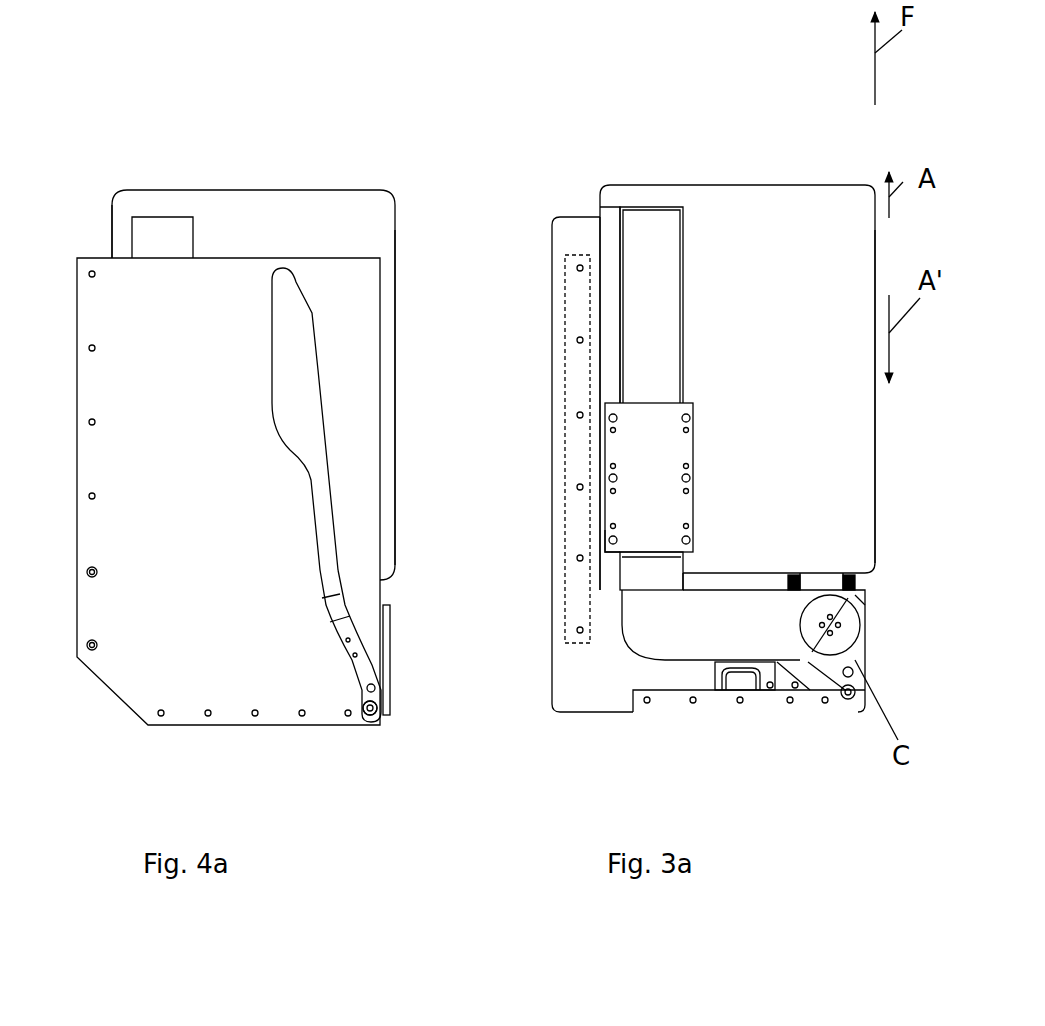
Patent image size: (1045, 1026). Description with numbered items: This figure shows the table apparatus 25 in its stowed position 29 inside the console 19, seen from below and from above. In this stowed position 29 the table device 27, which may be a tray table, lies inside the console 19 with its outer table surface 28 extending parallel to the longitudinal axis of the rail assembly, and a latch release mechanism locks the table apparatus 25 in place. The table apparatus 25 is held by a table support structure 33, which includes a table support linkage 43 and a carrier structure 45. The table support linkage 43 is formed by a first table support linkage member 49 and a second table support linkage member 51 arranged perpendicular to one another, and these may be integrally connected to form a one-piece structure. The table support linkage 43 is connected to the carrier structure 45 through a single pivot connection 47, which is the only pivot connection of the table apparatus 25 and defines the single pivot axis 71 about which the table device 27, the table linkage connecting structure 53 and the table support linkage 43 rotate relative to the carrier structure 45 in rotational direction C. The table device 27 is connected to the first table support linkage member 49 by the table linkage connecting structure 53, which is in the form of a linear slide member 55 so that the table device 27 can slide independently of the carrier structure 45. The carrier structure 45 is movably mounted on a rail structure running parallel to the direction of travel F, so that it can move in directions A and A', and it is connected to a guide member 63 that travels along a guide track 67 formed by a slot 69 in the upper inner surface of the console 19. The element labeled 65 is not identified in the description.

In FIG. 4a, the console 19 is at (275, 727).
In FIG. 3a, the console 19 is at (618, 718).
In FIG. 3a, the table apparatus 25 is at (598, 207).
In FIG. 4a, the table device 27 is at (297, 215).
In FIG. 3a, the table device 27 is at (735, 195).
In FIG. 4a, the outer table surface 28 is at (396, 392).
In FIG. 3a, the outer table surface 28 is at (879, 432).
In FIG. 4a, the stowed position 29 is at (103, 247).
In FIG. 3a, the stowed position 29 is at (580, 207).
In FIG. 3a, the table support structure 33 is at (622, 650).
In FIG. 3a, the table support linkage 43 is at (618, 583).
In FIG. 4a, the carrier structure 45 is at (391, 626).
In FIG. 3a, the carrier structure 45 is at (832, 670).
In FIG. 3a, the pivot connection 47 is at (1000, 625).
In FIG. 3a, the first table support linkage member 49 is at (640, 575).
In FIG. 3a, the second table support linkage member 51 is at (730, 632).
In FIG. 3a, the table linkage connecting structure 53 is at (685, 424).
In FIG. 3a, the linear slide member 55 is at (640, 430).
In FIG. 4a, the guide member 63 is at (372, 722).
In FIG. 4a, the lever 65 is at (365, 705).
In FIG. 4a, the guide track 67 is at (270, 290).
In FIG. 4a, the slot 69 is at (378, 716).
In FIG. 3a, the slot 69 is at (818, 664).
In FIG. 3a, the pivot axis 71 is at (852, 600).